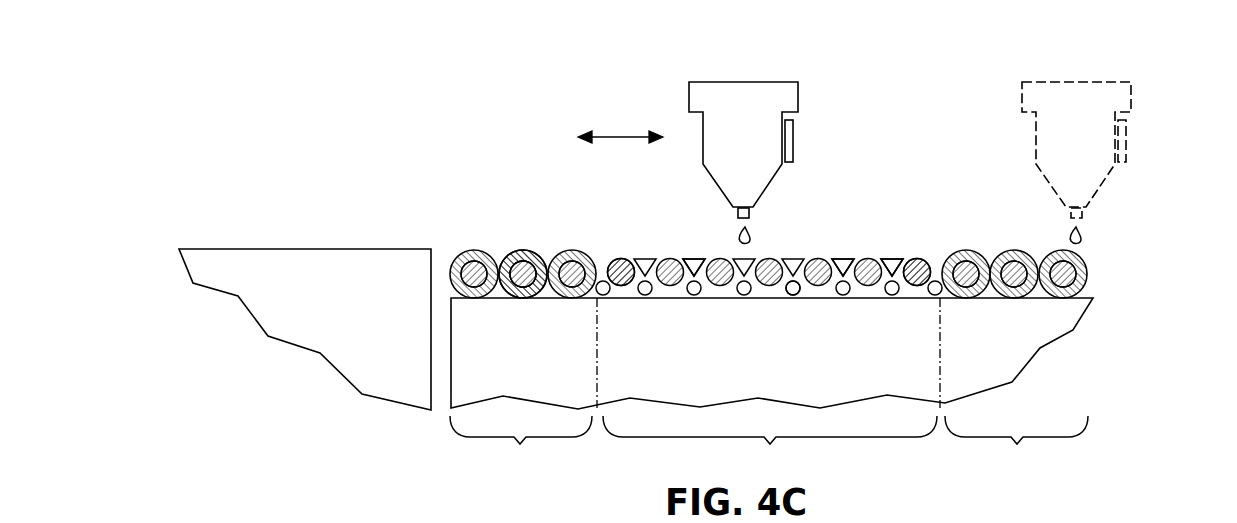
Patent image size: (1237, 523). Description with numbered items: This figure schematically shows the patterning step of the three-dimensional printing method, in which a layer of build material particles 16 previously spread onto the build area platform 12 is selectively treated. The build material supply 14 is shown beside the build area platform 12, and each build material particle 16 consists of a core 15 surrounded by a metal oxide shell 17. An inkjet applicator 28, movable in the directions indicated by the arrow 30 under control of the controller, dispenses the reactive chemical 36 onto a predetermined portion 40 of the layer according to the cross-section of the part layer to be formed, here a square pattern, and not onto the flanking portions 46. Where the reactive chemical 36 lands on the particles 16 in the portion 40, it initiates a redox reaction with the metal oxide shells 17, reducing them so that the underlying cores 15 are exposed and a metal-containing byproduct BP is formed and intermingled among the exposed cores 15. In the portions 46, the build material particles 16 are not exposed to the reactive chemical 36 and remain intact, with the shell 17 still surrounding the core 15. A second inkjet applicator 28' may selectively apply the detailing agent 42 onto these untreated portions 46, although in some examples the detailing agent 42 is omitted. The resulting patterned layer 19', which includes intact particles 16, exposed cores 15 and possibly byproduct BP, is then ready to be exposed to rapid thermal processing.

The build area platform 12 is at (1045, 320).
The build material supply 14 is at (300, 307).
The core 15 is at (462, 268).
The build material particles 16 is at (1093, 273).
The metal oxide shell 17 is at (523, 258).
The layer 19' is at (399, 236).
The inkjet applicator 28 is at (740, 125).
The inkjet applicator 28' is at (1073, 124).
The arrow 30 is at (622, 136).
The reactive chemical 36 is at (750, 239).
The portion 40 is at (770, 441).
The detailing agent 42 is at (1082, 238).
The portions 46 is at (769, 441).
The metal-containing byproduct BP is at (693, 262).